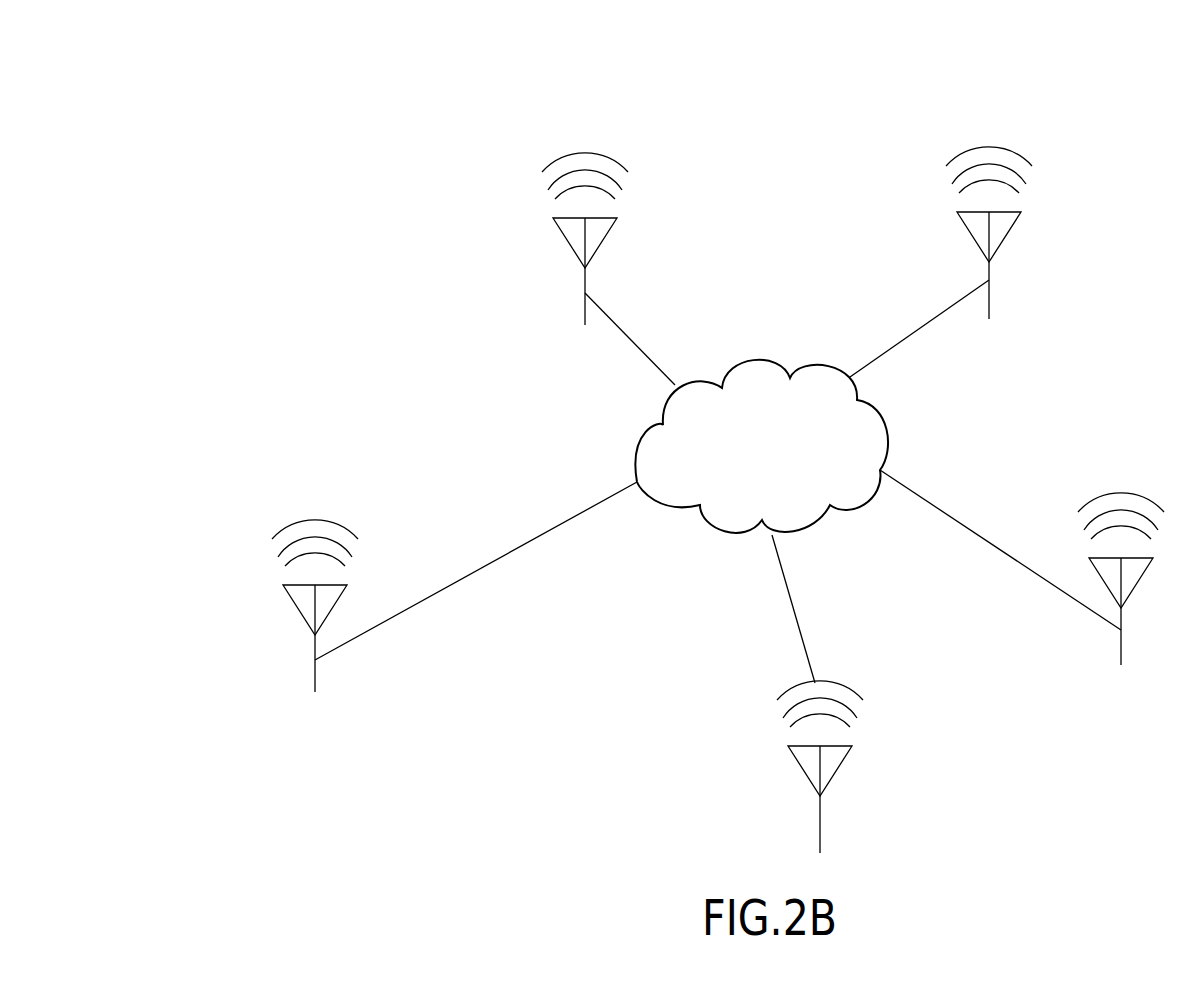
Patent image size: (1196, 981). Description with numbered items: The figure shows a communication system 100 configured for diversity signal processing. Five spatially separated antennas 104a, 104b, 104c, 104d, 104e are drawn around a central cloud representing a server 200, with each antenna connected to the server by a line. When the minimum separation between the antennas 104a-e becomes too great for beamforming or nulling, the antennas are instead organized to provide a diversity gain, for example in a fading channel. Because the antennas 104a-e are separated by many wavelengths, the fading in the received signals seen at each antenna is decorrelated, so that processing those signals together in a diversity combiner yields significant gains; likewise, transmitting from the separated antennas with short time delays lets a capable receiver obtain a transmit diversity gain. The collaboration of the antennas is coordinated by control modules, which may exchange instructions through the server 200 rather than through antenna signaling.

The communication system 100 is at (204, 60).
The server 200 is at (782, 458).
The antenna 104a is at (285, 513).
The antenna 104b is at (554, 148).
The antenna 104c is at (958, 140).
The antenna 104d is at (1090, 488).
The antenna 104e is at (769, 678).